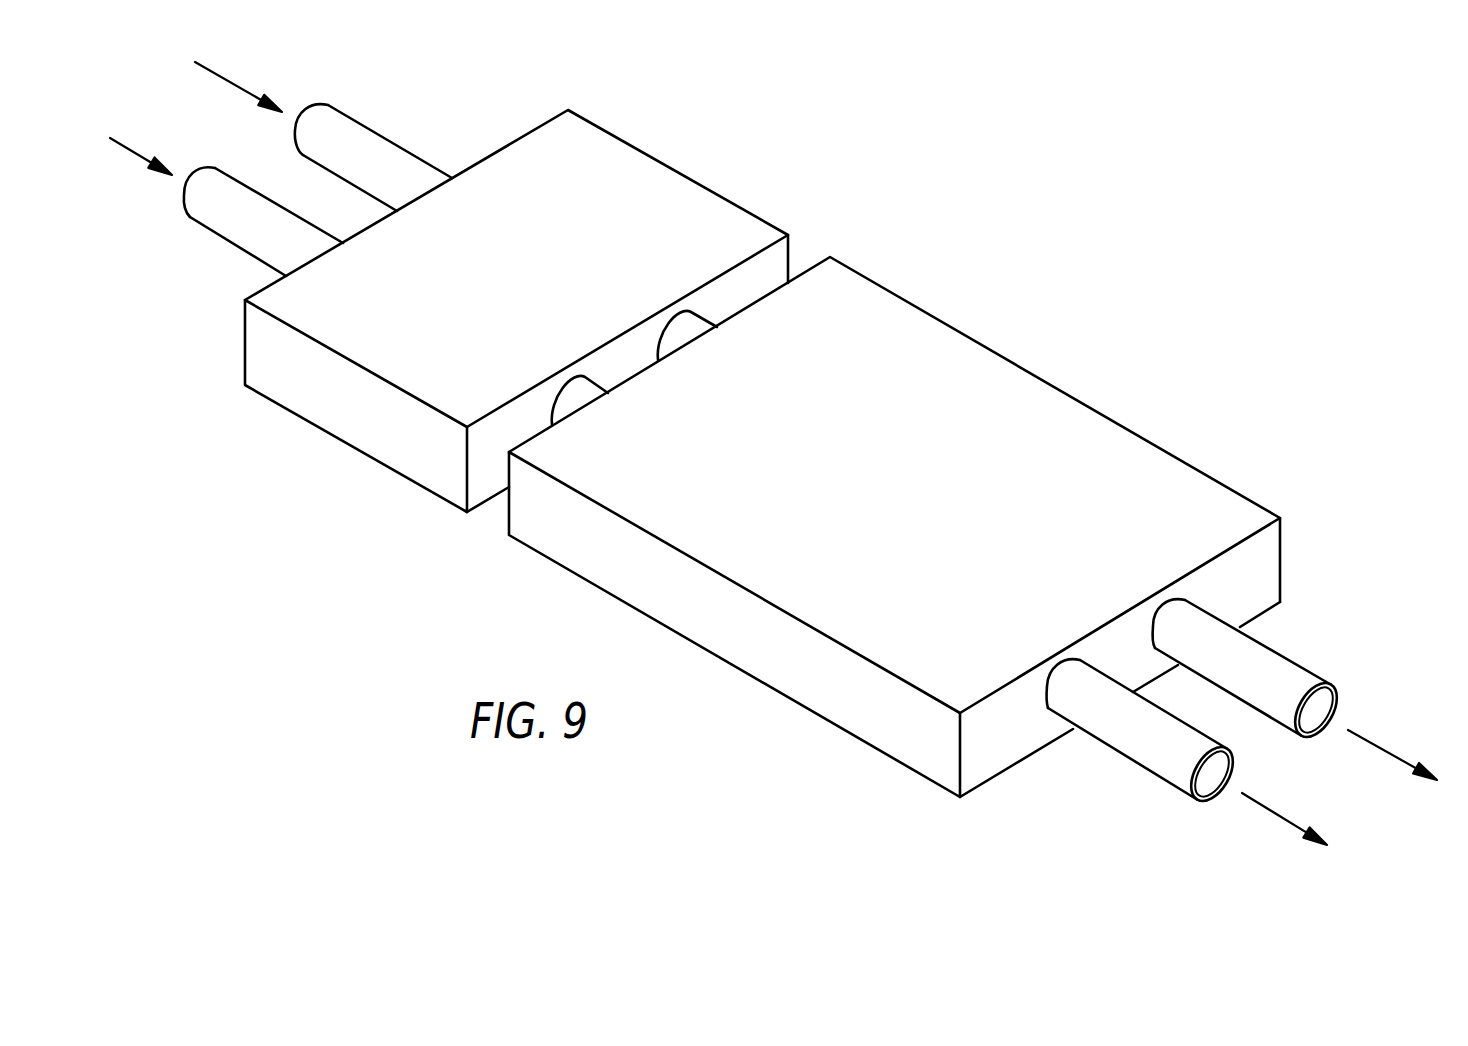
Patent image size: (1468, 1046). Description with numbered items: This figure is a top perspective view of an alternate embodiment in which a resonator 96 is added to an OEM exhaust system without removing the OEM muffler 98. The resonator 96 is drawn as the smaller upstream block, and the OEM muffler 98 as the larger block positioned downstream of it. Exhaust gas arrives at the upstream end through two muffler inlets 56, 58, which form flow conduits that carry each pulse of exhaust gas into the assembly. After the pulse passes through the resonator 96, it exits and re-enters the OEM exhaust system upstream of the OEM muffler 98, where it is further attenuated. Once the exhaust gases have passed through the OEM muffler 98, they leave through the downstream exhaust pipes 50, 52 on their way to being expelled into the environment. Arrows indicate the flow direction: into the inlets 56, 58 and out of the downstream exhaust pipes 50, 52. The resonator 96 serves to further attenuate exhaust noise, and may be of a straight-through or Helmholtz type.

The downstream exhaust pipe 50 is at (1268, 668).
The downstream exhaust pipe 52 is at (1138, 742).
The muffler inlet 56 is at (225, 220).
The muffler inlet 58 is at (365, 140).
The resonator 96 is at (632, 188).
The OEM muffler 98 is at (993, 400).